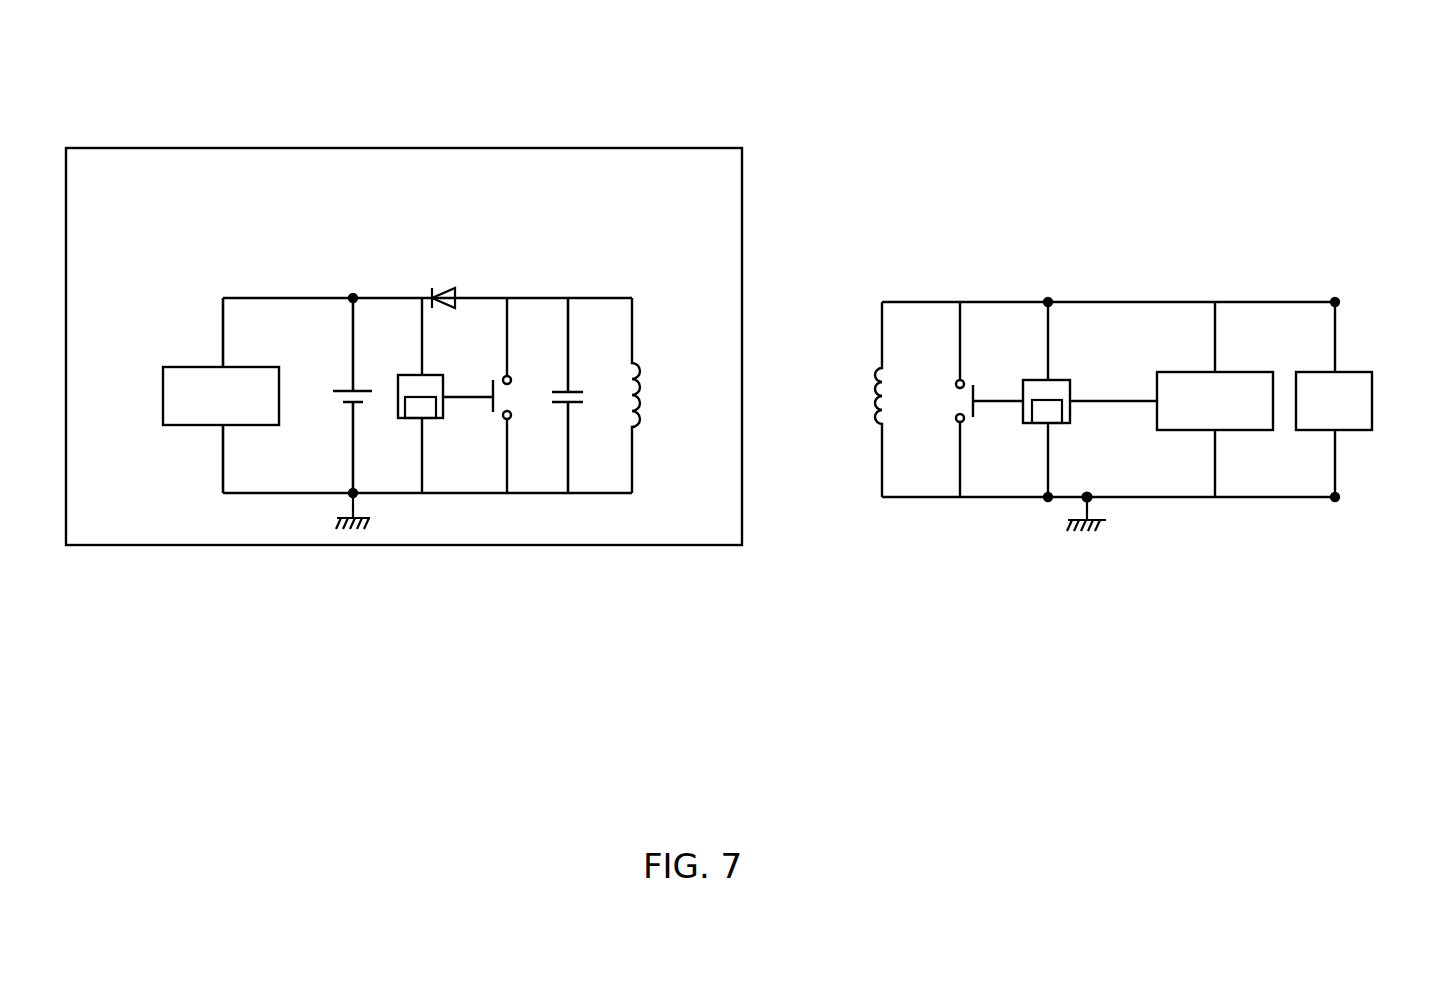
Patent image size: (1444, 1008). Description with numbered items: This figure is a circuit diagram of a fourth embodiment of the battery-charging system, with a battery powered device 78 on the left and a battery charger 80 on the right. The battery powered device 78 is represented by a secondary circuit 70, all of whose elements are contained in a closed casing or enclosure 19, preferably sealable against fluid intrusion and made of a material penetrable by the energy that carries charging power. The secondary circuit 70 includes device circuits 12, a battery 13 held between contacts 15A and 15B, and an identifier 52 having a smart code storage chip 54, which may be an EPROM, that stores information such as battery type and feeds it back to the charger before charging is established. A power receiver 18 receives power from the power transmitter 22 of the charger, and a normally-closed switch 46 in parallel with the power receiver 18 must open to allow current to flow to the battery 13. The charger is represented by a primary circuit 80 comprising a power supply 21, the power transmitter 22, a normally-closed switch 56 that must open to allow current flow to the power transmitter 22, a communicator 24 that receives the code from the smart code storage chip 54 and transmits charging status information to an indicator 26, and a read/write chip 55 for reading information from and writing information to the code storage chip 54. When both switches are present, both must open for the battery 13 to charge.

The battery powered device 78 is at (128, 110).
The enclosure 19 is at (576, 545).
The secondary circuit 70 is at (190, 462).
The device circuits 12 is at (162, 400).
The battery 13 is at (321, 362).
The contact 15A is at (353, 296).
The contact 15B is at (355, 494).
The identifier 52 is at (438, 373).
The smart code storage chip 54 is at (425, 418).
The switch 46 is at (518, 395).
The power receiver 18 is at (650, 393).
The primary circuit 80 is at (1164, 565).
The power transmitter 22 is at (865, 397).
The switch 56 is at (948, 398).
The communicator 24 is at (1022, 388).
The read/write chip 55 is at (1050, 423).
The indicator 26 is at (1245, 370).
The power supply 21 is at (1355, 372).